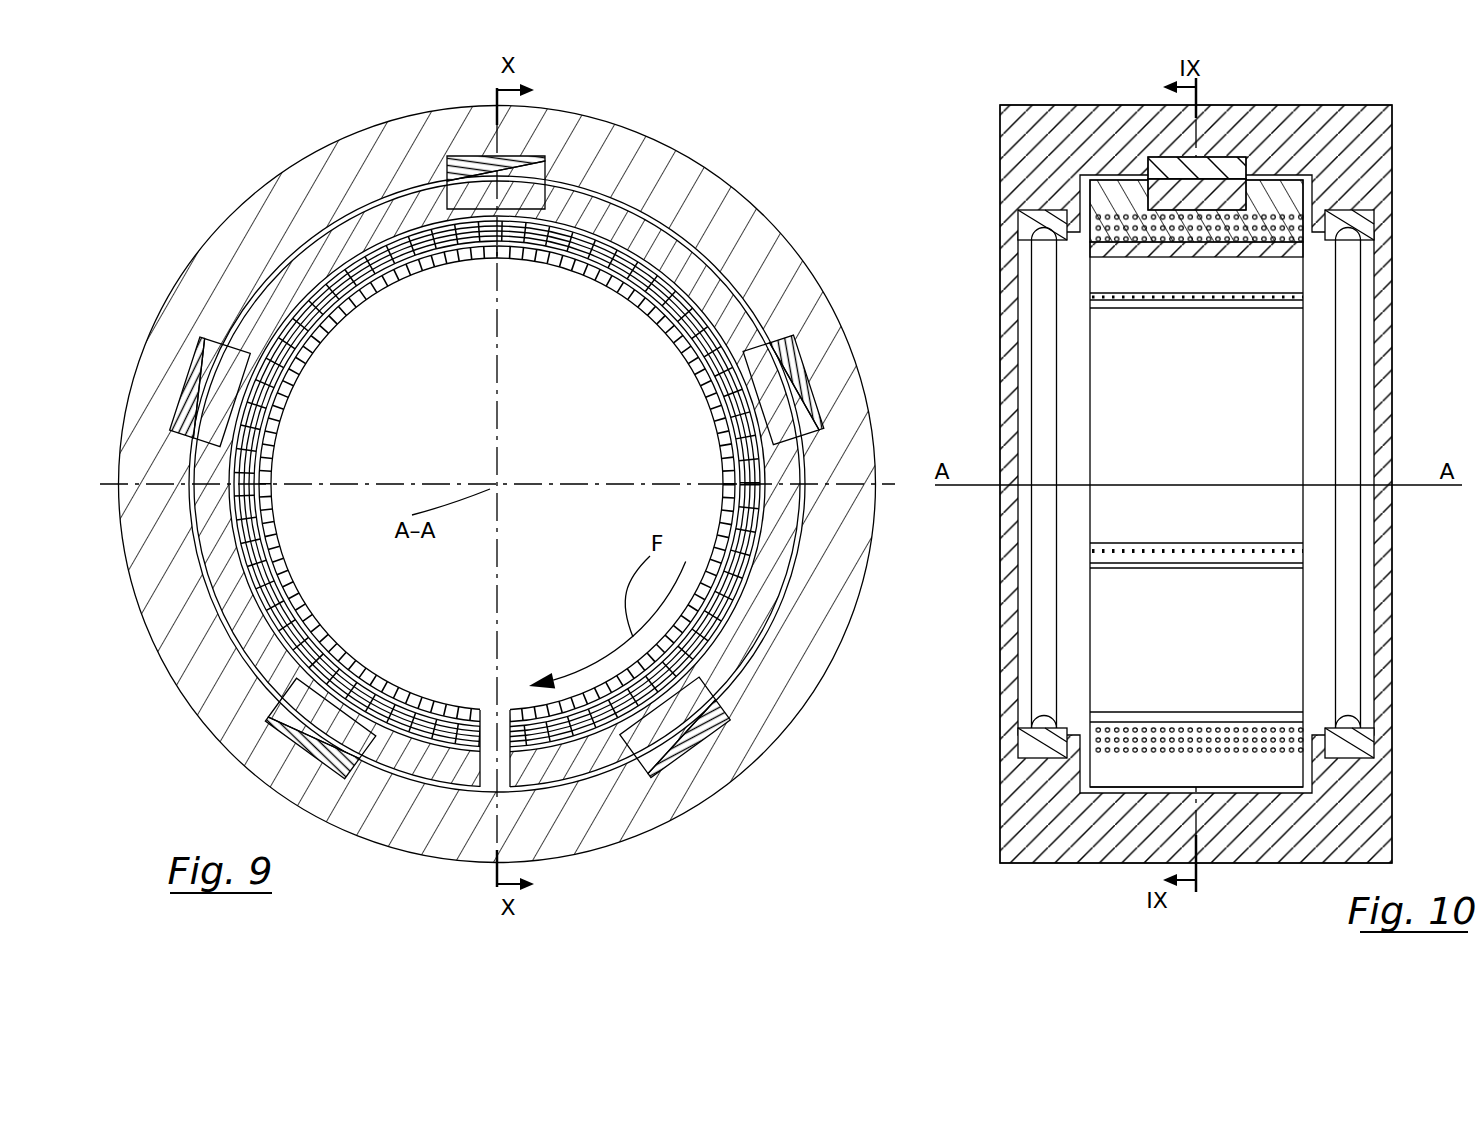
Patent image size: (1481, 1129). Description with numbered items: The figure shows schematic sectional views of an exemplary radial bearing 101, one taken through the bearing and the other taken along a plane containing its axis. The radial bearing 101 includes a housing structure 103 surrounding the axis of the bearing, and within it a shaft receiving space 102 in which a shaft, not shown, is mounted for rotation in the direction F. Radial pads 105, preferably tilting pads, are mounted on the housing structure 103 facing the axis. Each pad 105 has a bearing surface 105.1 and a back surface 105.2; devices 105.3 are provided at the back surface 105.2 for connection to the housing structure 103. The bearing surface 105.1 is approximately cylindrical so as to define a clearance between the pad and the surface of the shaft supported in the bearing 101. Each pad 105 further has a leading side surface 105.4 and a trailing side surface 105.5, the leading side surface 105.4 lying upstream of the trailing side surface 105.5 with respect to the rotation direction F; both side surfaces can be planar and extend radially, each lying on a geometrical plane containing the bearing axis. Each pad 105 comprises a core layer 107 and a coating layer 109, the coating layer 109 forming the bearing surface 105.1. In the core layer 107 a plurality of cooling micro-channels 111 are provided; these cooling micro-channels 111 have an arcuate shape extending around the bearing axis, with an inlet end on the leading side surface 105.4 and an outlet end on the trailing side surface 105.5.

In FIG. 9, the radial bearing 101 is at (232, 124).
In FIG. 10, the radial bearing 101 is at (968, 115).
In FIG. 9, the shaft receiving space 102 is at (565, 526).
In FIG. 10, the shaft receiving space 102 is at (1034, 328).
In FIG. 9, the housing structure 103 is at (250, 218).
In FIG. 10, the housing structure 103 is at (1150, 110).
In FIG. 9, the radial pads 105 is at (716, 452).
In FIG. 10, the radial pads 105 is at (1305, 402).
In FIG. 9, the bearing surface 105.1 is at (528, 268).
In FIG. 10, the bearing surface 105.1 is at (1265, 257).
In FIG. 9, the back surface 105.2 is at (622, 250).
In FIG. 10, the back surface 105.2 is at (1262, 205).
In FIG. 9, the devices for connection to the housing structure 105.3 is at (520, 235).
In FIG. 10, the devices for connection to the housing structure 105.3 is at (1222, 192).
In FIG. 9, the leading side surface 105.4 is at (340, 262).
In FIG. 9, the trailing side surface 105.5 is at (700, 403).
In FIG. 10, the trailing side surface 105.5 is at (1232, 805).
In FIG. 9, the core layer 107 is at (403, 212).
In FIG. 10, the core layer 107 is at (1117, 202).
In FIG. 9, the coating layer 109 is at (552, 258).
In FIG. 10, the coating layer 109 is at (1118, 252).
In FIG. 9, the cooling micro-channels 111 is at (258, 642).
In FIG. 10, the cooling micro-channels 111 is at (1300, 238).